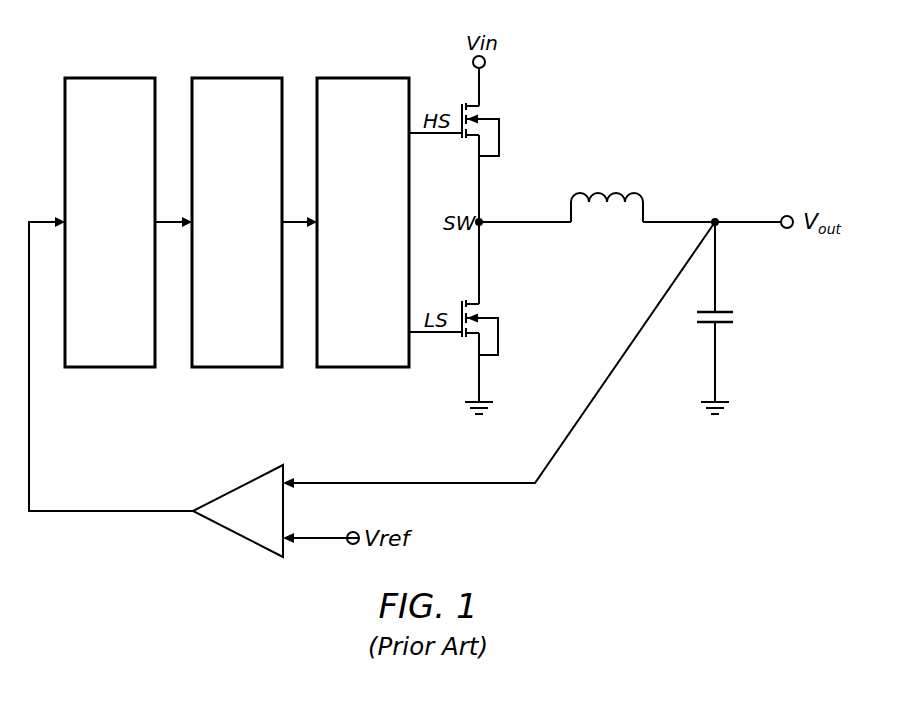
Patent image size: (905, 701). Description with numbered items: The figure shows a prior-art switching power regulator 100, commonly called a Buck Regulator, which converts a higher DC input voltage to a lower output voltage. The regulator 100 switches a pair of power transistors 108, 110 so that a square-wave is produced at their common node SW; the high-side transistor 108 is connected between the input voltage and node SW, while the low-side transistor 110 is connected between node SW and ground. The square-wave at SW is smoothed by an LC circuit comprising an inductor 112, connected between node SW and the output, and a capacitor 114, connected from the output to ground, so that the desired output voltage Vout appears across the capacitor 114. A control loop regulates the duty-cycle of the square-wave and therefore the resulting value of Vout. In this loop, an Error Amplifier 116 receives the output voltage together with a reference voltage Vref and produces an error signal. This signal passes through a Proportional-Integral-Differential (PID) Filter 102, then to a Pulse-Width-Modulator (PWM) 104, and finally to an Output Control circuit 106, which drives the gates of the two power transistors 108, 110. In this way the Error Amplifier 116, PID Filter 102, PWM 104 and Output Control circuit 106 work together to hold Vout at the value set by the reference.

The power regulator 100 is at (667, 68).
The Proportional-Integral-Differential (PID) Filter 102 is at (110, 222).
The Pulse-Width-Modulator (PWM) 104 is at (237, 222).
The Output Control circuit 106 is at (363, 222).
The power transistor 108 is at (488, 120).
The power transistor 110 is at (489, 318).
The inductor 112 is at (617, 193).
The capacitor 114 is at (723, 323).
The Error Amplifier 116 is at (238, 486).